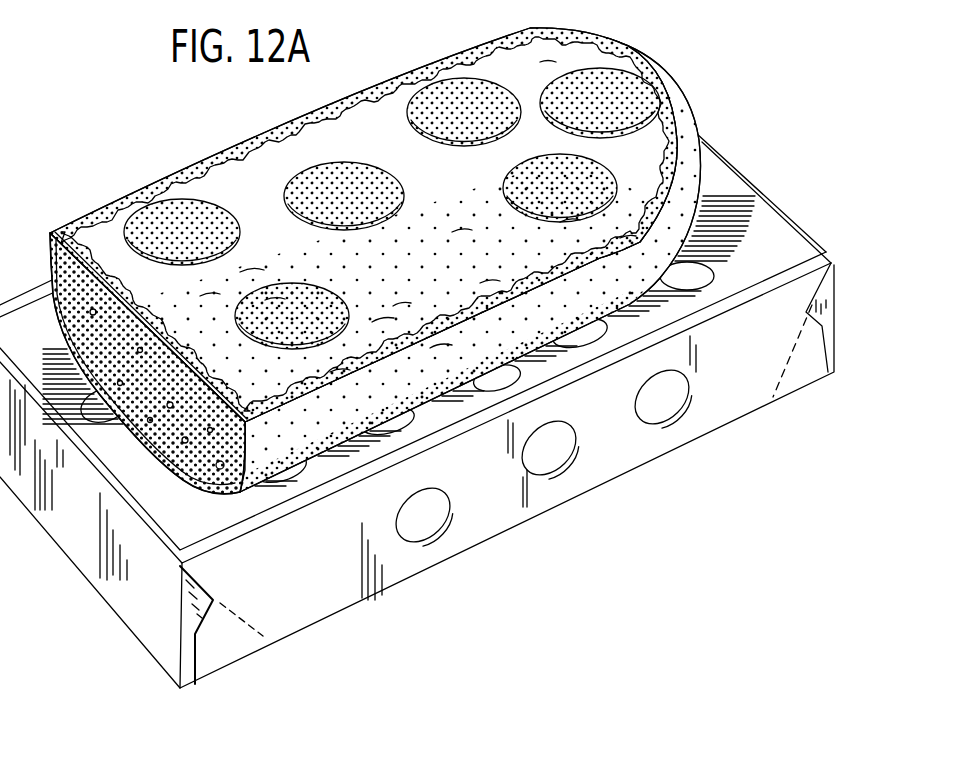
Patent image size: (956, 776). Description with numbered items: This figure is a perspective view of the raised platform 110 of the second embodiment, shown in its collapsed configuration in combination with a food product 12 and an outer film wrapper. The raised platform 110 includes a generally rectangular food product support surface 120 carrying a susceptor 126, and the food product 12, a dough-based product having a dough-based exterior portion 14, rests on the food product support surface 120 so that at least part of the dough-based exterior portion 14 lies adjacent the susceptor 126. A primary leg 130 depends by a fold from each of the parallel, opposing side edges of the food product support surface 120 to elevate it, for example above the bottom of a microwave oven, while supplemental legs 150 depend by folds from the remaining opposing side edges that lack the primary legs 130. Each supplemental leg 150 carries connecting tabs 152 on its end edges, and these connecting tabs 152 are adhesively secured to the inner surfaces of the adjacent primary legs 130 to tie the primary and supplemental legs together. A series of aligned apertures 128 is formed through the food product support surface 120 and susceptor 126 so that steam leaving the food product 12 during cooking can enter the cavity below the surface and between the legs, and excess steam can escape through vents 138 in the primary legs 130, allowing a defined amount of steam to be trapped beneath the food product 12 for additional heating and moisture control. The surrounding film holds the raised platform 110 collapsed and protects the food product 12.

The food product 12 is at (133, 162).
The dough-based exterior portion 14 is at (205, 492).
The raised platform 110 is at (766, 170).
The food product support surface 120 is at (367, 473).
The susceptor 126 is at (418, 432).
The apertures 128 is at (690, 292).
The primary leg 130 is at (487, 520).
The vents 138 is at (585, 460).
The supplemental leg 150 is at (137, 626).
The connecting tab 152 is at (185, 683).